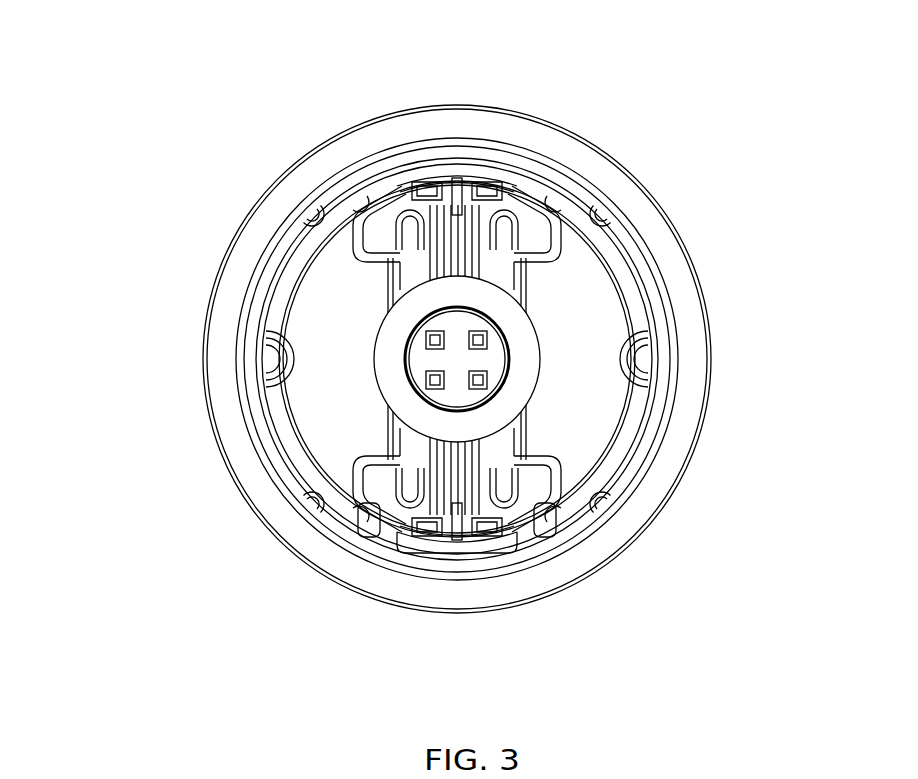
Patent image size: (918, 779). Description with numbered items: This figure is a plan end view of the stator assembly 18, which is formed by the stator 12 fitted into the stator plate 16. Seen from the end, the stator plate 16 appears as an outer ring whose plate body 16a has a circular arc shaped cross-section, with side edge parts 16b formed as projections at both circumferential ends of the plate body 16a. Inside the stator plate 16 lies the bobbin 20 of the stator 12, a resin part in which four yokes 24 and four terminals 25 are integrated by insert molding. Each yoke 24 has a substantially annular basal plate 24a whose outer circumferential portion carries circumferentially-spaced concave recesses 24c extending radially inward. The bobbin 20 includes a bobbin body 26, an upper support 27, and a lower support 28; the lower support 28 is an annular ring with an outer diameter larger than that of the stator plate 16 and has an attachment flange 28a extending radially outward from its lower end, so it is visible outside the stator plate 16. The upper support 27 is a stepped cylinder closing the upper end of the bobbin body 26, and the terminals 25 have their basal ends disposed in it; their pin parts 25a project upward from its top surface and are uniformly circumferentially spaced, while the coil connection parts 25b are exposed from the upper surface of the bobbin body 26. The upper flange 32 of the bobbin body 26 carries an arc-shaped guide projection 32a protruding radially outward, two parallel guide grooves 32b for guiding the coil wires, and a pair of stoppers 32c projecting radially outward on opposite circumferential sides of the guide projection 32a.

The stator 12 is at (690, 181).
The stator plate 16 is at (533, 432).
The plate body 16a is at (640, 292).
The side edge parts 16b is at (363, 537).
The stator assembly 18 is at (680, 136).
The bobbin 20 is at (682, 219).
The yoke 24 is at (281, 434).
The basal plate 24a is at (623, 435).
The concave recesses 24c is at (328, 215).
The terminal 25 is at (418, 343).
The pin part 25a is at (485, 340).
The coil connection part 25b is at (392, 210).
The bobbin body 26 is at (316, 295).
The upper support 27 is at (517, 392).
The lower support 28 is at (364, 359).
The attachment flange 28a is at (222, 390).
The upper flange 32 is at (312, 320).
The guide projection 32a is at (503, 540).
The guide grooves 32b is at (435, 517).
The stoppers 32c is at (380, 525).